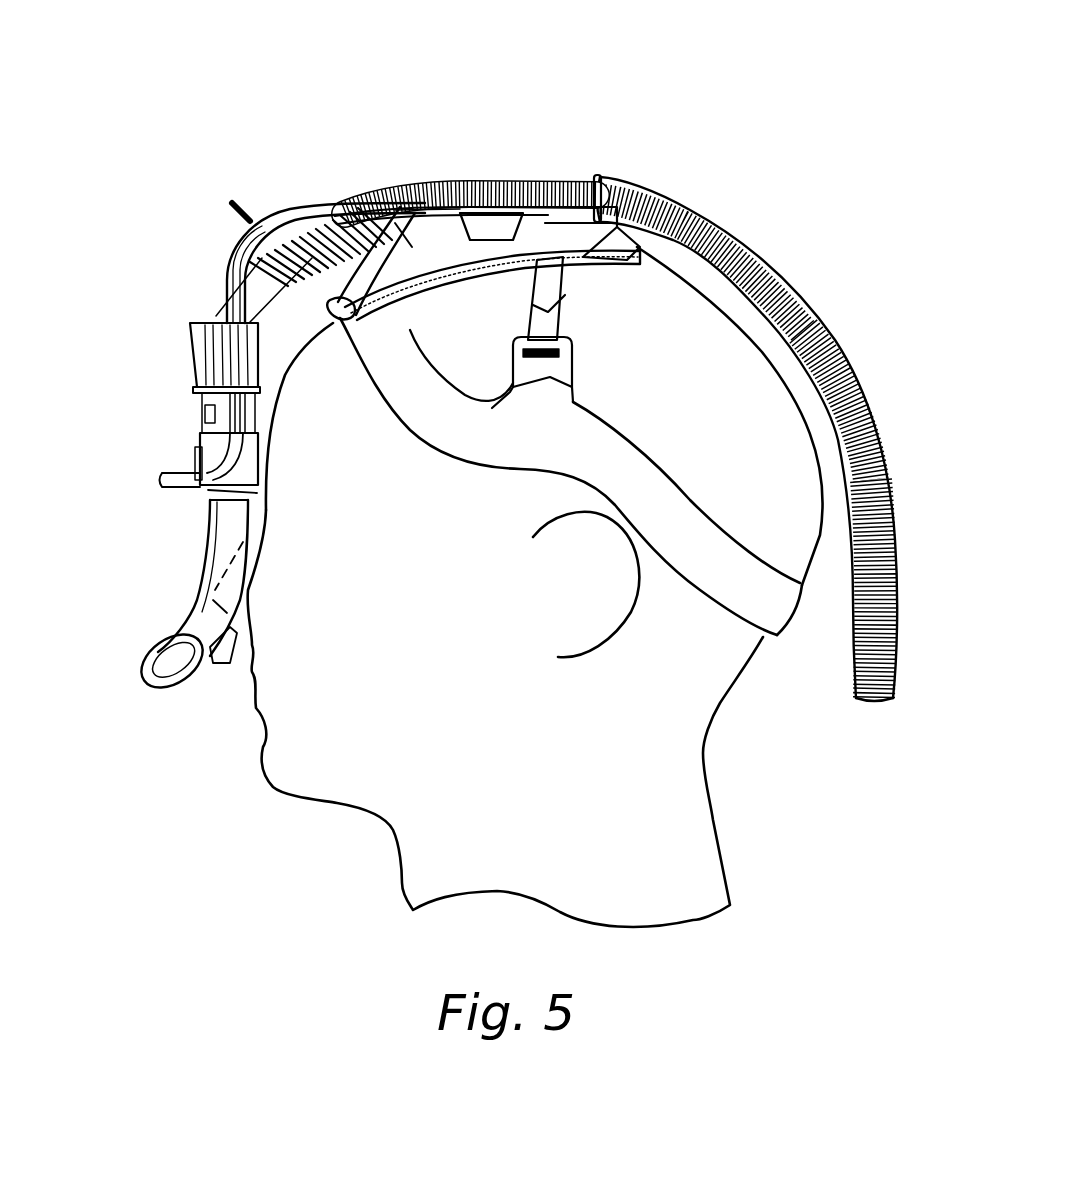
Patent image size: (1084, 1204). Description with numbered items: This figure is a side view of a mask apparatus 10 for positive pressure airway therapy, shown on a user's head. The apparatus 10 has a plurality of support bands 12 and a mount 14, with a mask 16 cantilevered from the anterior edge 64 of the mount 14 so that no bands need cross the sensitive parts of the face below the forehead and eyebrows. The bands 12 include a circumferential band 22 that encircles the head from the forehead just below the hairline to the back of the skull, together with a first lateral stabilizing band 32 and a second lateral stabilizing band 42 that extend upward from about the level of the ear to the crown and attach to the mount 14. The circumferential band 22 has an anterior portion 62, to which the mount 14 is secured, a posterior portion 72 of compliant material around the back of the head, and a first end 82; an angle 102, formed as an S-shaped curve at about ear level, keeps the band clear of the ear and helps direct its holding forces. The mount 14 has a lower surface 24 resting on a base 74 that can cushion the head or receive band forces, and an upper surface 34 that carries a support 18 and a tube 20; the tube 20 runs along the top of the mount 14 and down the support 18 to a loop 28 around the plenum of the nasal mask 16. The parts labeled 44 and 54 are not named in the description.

The mask apparatus 10 is at (560, 152).
The support bands 12 is at (460, 425).
The mount 14 is at (596, 174).
The mask 16 is at (203, 557).
The support 18 is at (232, 247).
The tube 20 is at (780, 280).
The circumferential band 22 is at (585, 503).
The lower surface 24 is at (578, 258).
The loop 28 is at (162, 478).
The first lateral stabilizing band 32 is at (601, 332).
The upper surface 34 is at (447, 187).
The second lateral stabilizing band 42 is at (570, 290).
The band 44 is at (380, 187).
The short hose section 54 is at (700, 190).
The anterior portion 62 is at (390, 347).
The anterior edge 64 is at (333, 322).
The posterior portion 72 is at (780, 635).
The base 74 is at (463, 272).
The first end 82 is at (537, 180).
The angle 102 is at (553, 480).